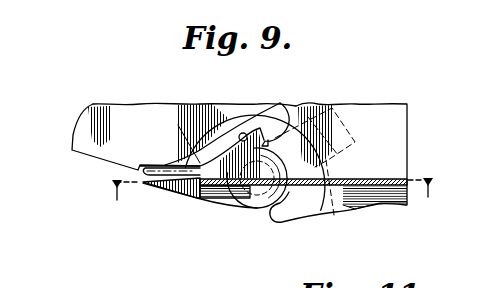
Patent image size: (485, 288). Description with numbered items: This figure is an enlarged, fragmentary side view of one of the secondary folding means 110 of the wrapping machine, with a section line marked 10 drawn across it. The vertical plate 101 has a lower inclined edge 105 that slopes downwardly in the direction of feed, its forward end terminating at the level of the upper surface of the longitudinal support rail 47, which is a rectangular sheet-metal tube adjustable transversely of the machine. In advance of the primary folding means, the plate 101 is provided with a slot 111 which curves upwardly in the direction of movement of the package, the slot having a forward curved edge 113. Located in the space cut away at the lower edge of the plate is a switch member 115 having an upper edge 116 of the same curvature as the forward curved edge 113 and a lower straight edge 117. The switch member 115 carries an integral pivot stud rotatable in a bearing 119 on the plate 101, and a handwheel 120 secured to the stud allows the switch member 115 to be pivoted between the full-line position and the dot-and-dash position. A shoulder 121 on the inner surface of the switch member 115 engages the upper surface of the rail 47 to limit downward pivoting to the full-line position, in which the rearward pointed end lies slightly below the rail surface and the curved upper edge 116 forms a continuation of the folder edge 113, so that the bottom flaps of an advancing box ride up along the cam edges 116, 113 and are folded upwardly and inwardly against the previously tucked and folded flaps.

The vertical plate 101 is at (372, 110).
The lower inclined edge 105 is at (97, 162).
The secondary folding means 110 is at (258, 102).
The slot 111 is at (242, 133).
The forward curved edge 113 is at (282, 122).
The switch member 115 is at (188, 200).
The upper edge 116 is at (176, 163).
The lower straight edge 117 is at (157, 196).
The bearing 119 is at (257, 190).
The handwheel 120 is at (288, 232).
The shoulder 121 is at (221, 198).
The longitudinal support rail 47 is at (377, 178).
The section line 10- 10 is at (272, 192).